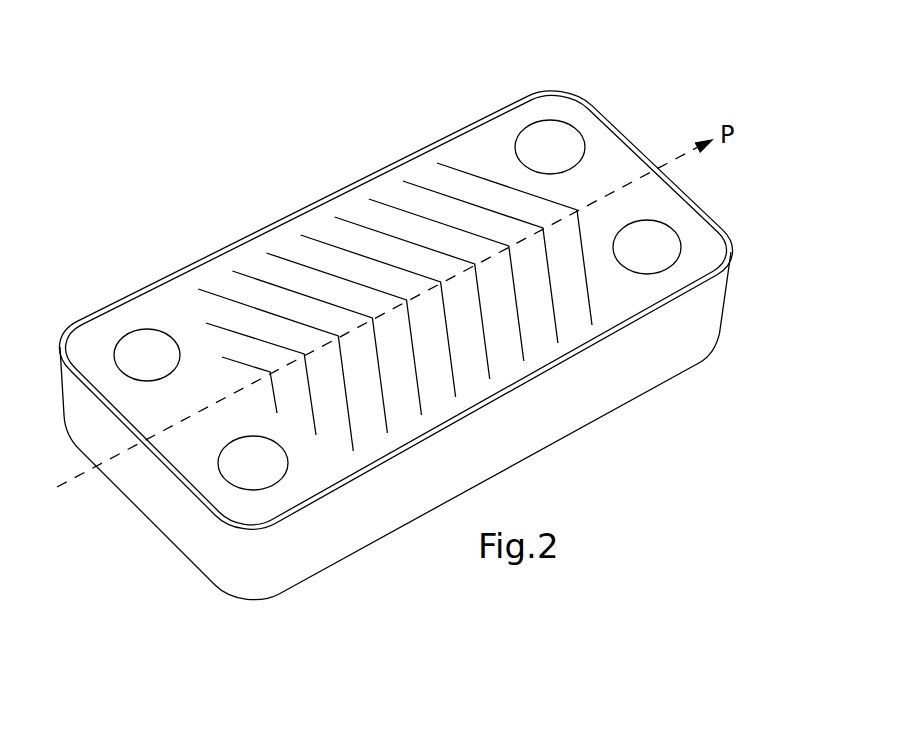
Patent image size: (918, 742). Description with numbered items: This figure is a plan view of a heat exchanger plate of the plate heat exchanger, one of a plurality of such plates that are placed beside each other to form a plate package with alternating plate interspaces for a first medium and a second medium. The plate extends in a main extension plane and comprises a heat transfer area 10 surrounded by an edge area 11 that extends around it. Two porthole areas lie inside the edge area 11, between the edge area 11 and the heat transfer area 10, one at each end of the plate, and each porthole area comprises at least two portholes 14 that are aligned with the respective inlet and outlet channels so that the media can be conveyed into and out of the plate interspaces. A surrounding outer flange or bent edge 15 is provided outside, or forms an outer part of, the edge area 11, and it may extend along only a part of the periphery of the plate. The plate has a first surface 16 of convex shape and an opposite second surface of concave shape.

The heat transfer area 10 is at (370, 288).
The edge area 11 is at (425, 139).
The portholes 14 is at (397, 305).
The bent edge 15 is at (160, 508).
The first surface 16 is at (258, 292).